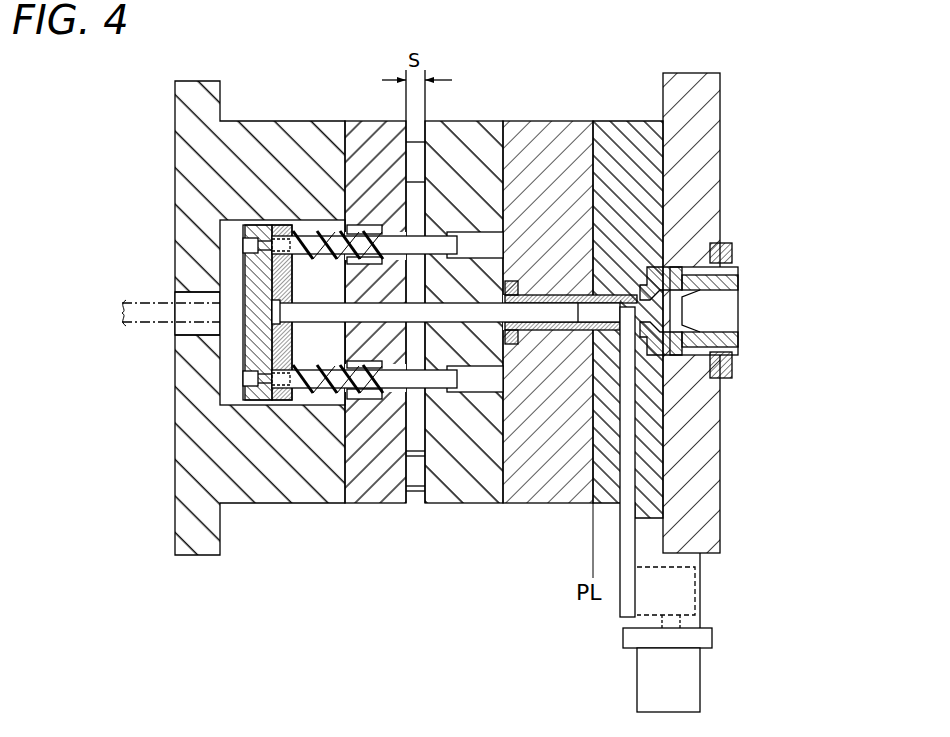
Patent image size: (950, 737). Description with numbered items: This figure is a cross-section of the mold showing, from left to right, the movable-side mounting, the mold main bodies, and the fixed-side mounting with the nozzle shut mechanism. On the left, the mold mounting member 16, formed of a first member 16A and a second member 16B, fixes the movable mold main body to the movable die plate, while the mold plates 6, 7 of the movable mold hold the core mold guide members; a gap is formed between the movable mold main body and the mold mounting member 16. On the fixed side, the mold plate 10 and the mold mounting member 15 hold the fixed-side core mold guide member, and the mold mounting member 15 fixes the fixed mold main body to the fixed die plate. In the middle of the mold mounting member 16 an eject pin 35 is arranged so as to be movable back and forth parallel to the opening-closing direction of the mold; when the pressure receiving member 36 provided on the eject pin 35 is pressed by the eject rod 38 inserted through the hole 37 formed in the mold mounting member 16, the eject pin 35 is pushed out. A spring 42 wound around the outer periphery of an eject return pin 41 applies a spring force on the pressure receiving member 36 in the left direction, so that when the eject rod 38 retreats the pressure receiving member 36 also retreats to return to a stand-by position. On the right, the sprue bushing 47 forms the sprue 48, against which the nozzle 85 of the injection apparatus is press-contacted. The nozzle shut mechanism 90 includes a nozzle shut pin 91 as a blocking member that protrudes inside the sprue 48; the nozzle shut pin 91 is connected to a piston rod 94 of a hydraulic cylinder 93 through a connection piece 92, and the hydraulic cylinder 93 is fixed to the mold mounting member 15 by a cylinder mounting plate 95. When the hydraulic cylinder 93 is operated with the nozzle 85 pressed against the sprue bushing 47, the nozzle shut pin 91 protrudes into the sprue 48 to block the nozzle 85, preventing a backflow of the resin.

The mold plate 6 is at (552, 470).
The mold plate 7 is at (475, 475).
The mold plate 10 is at (605, 480).
The mold mounting member 15 is at (690, 82).
The mold mounting member 16 is at (275, 483).
The first member 16A is at (200, 532).
The second member 16B is at (385, 480).
The eject pin 35 is at (268, 342).
The pressure receiving member 36 is at (245, 272).
The hole 37 is at (195, 326).
The eject rod 38 is at (160, 302).
The eject return pin 41 is at (324, 244).
The spring 42 is at (312, 236).
The sprue bushing 47 is at (648, 282).
The sprue 48 is at (597, 300).
The nozzle 85 is at (739, 335).
The nozzle shut mechanism 90 is at (736, 623).
The nozzle shut pin 91 is at (630, 432).
The connection piece 92 is at (700, 588).
The hydraulic cylinder 93 is at (700, 675).
The piston rod 94 is at (705, 625).
The cylinder mounting plate 95 is at (700, 575).